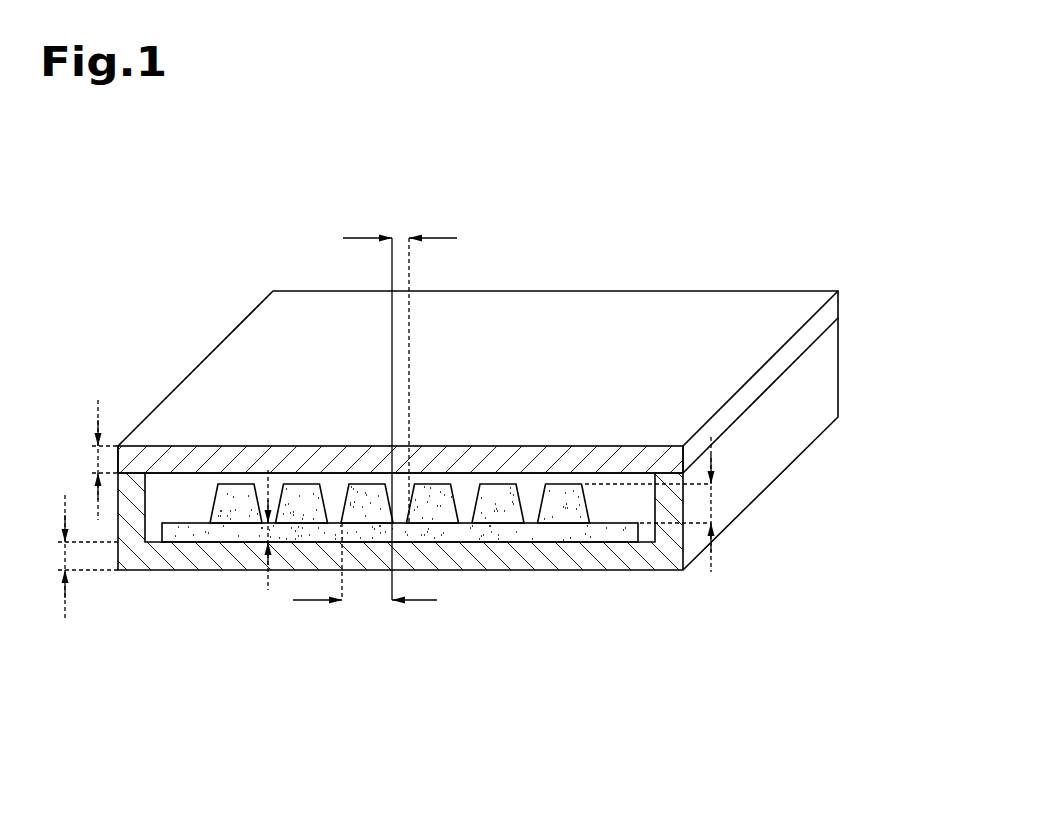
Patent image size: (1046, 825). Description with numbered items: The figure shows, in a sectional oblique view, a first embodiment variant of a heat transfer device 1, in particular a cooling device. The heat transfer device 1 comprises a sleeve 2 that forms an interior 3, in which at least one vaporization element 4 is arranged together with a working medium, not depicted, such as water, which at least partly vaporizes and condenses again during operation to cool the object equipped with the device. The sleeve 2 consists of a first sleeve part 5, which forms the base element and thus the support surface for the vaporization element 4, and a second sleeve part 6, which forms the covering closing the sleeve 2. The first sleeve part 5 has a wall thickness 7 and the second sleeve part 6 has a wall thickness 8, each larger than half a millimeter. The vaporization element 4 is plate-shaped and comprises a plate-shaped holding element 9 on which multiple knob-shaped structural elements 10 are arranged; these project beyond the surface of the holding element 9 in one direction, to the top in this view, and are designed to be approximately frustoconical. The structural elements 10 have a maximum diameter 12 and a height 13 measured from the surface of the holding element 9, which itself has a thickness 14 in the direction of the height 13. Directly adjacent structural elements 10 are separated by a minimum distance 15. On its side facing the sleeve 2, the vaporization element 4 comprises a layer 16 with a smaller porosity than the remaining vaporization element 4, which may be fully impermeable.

The heat transfer device 1 is at (806, 146).
The sleeve 2 is at (855, 290).
The interior 3 is at (195, 493).
The vaporization element 4 is at (493, 518).
The first sleeve part 5 is at (437, 557).
The second sleeve part 6 is at (572, 325).
The wall thickness 7 is at (55, 560).
The wall thickness 8 is at (89, 464).
The holding element 9 is at (555, 547).
The knob-shaped structural elements 10 is at (570, 492).
The maximum diameter 12 is at (375, 608).
The height 13 is at (722, 500).
The thickness 14 is at (263, 588).
The minimum distance 15 is at (407, 232).
The layer 16 is at (163, 545).